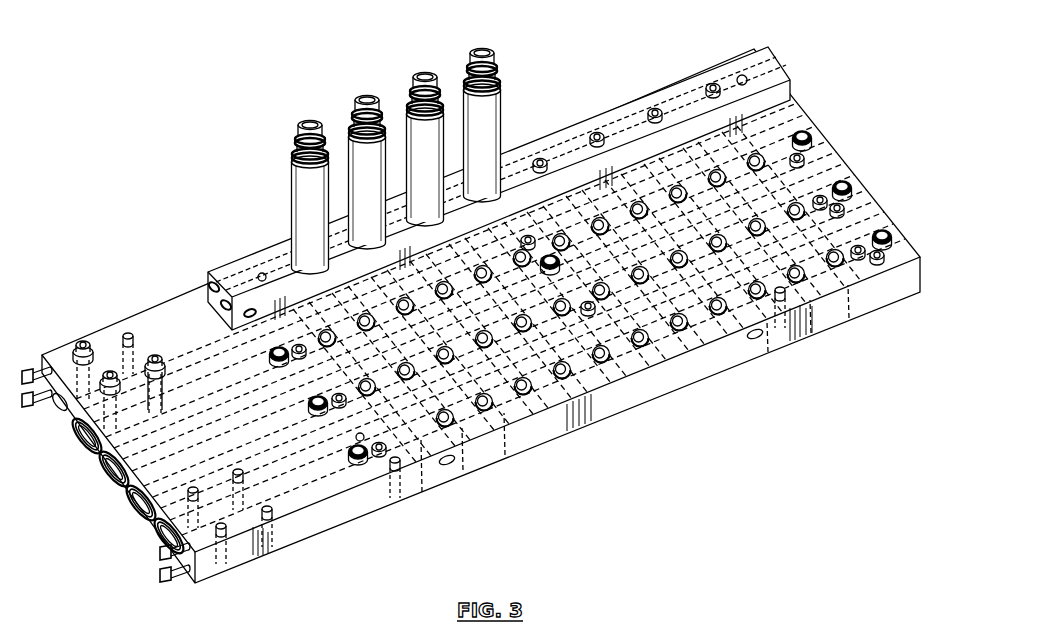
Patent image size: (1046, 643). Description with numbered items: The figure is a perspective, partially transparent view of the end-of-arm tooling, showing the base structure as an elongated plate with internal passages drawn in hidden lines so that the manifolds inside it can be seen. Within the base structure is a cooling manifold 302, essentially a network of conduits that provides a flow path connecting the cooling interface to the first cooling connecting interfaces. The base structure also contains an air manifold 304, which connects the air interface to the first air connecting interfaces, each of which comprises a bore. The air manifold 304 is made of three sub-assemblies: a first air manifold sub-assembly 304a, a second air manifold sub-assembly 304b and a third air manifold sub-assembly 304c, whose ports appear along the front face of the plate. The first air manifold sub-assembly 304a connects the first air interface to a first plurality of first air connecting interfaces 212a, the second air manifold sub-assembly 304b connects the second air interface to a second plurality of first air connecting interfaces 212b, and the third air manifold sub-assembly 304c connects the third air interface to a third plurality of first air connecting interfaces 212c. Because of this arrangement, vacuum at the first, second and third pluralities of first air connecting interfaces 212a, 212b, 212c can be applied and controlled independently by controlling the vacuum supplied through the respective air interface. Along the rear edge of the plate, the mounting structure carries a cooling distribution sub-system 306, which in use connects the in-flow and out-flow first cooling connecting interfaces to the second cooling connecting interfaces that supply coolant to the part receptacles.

The cooling manifold 302 is at (187, 331).
The air manifold 304 is at (275, 424).
The first air manifold sub-assembly 304a is at (86, 438).
The second air manifold sub-assembly 304b is at (116, 470).
The third air manifold sub-assembly 304c is at (140, 503).
The cooling distribution sub-system 306 is at (613, 126).
The first plurality of first air connecting interfaces 212a is at (422, 492).
The second plurality of first air connecting interfaces 212b is at (463, 470).
The third plurality of first air connecting interfaces 212c is at (505, 455).